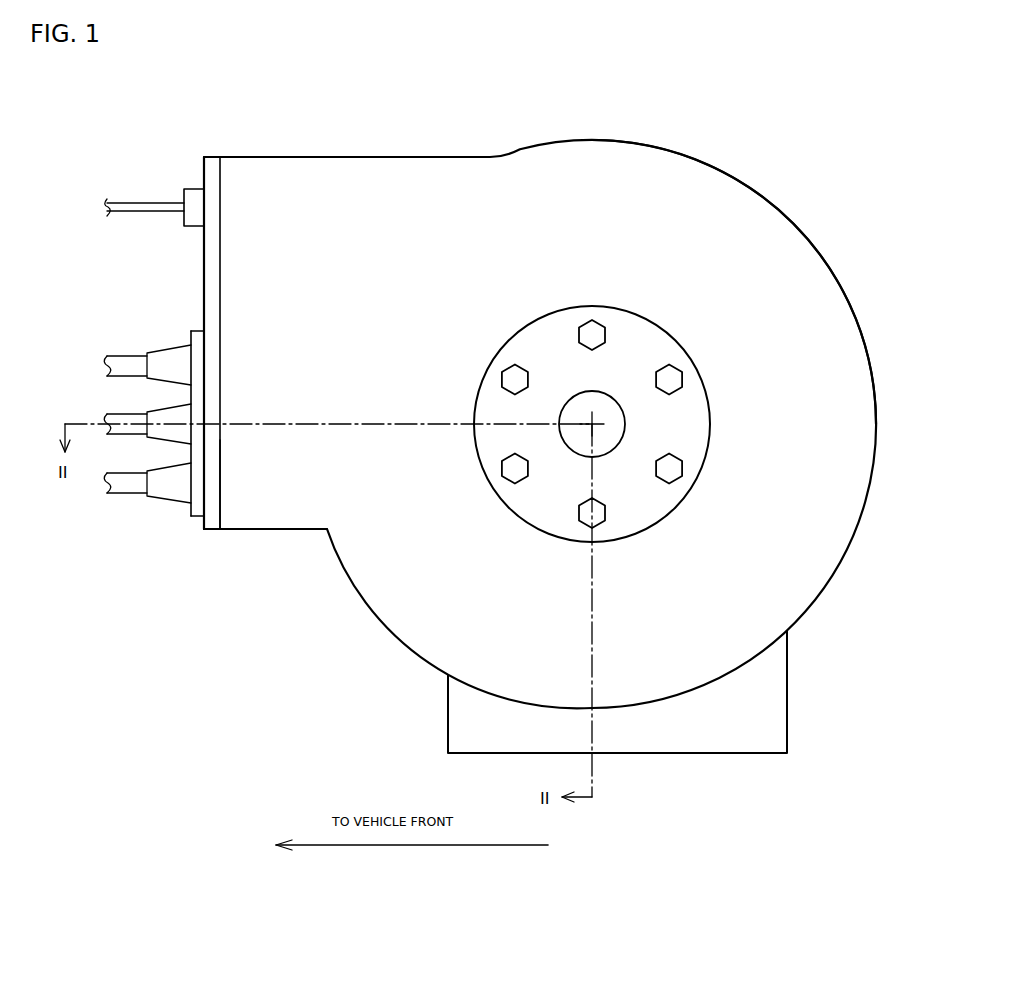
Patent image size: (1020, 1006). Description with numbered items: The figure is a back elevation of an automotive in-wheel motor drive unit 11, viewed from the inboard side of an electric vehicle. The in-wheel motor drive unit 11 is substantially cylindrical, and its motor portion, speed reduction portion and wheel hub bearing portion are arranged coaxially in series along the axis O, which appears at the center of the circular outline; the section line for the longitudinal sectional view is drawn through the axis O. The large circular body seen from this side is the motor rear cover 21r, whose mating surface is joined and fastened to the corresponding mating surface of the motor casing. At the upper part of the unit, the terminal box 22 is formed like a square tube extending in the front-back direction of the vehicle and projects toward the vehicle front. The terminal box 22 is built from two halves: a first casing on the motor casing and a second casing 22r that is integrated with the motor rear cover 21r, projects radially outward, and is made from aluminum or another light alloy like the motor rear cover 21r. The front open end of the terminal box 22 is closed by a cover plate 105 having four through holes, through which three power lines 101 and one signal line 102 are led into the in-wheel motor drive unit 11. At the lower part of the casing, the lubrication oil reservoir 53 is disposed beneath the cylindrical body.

The in-wheel motor drive unit 11 is at (382, 621).
The motor rear cover 21r is at (777, 261).
The terminal box 22 is at (203, 533).
The second casing 22r is at (237, 517).
The lubrication oil reservoir 53 is at (752, 737).
The power lines 101 is at (118, 371).
The signal line 102 is at (140, 206).
The cover plate 105 is at (213, 166).
The axis O is at (592, 424).